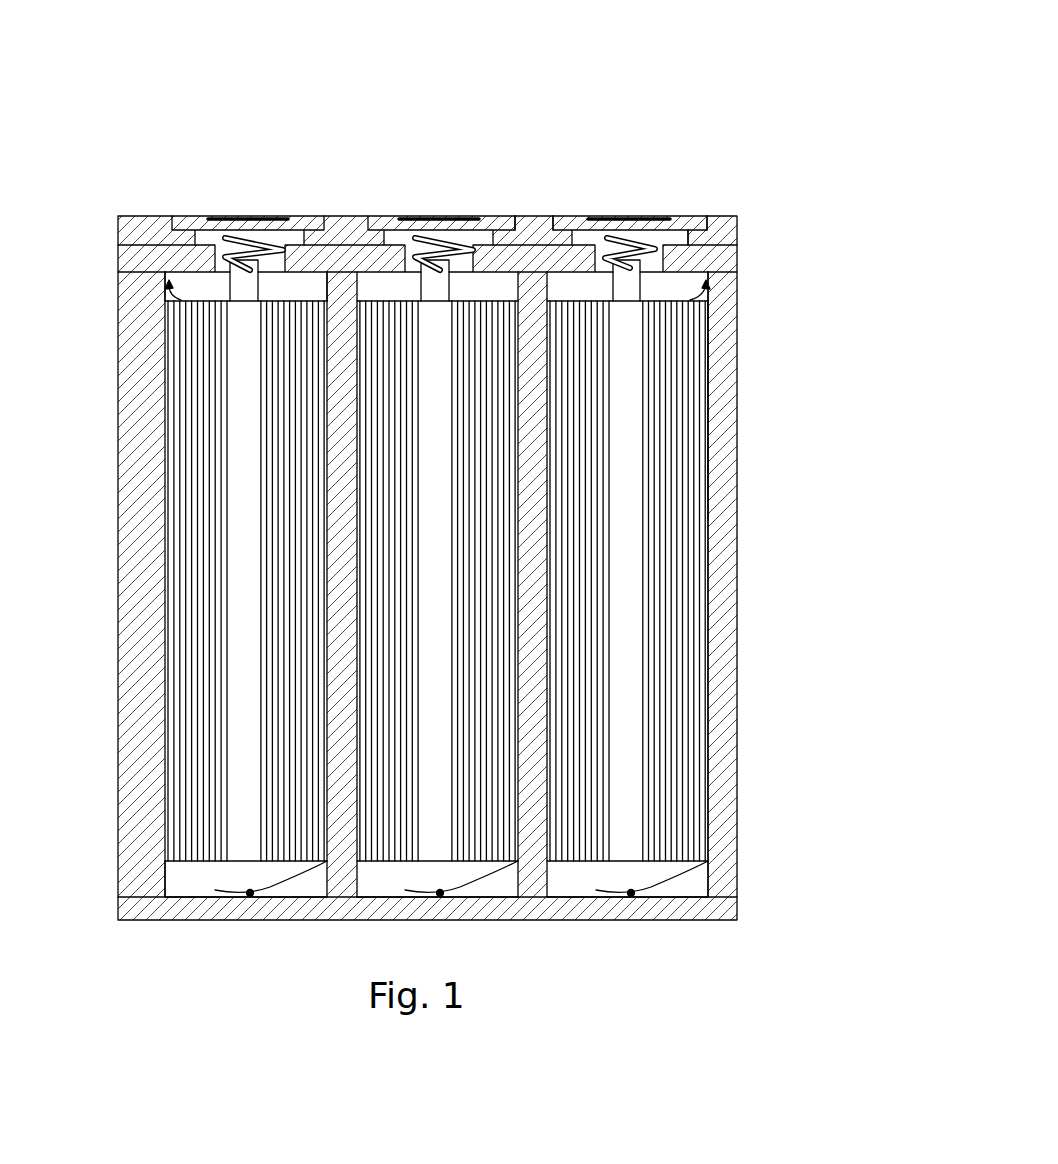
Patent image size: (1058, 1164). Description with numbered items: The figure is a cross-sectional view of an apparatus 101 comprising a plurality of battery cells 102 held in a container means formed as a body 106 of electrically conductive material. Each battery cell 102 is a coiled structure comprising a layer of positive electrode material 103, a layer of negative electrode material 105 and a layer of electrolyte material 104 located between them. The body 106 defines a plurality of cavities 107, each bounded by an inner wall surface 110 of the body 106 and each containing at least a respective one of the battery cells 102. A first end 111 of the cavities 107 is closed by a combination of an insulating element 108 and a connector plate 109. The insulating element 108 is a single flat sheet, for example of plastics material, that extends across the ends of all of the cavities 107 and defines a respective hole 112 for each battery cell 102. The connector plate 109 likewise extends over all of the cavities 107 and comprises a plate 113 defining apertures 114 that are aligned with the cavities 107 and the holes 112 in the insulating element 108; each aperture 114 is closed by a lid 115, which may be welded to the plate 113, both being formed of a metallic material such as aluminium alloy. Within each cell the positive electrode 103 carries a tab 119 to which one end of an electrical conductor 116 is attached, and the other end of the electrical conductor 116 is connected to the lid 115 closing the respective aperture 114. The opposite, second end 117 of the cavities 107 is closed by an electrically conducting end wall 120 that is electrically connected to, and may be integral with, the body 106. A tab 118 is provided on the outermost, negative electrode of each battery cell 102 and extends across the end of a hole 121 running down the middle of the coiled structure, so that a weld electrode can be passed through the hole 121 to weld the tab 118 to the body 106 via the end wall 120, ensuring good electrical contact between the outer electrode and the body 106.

The apparatus 101 is at (654, 70).
The battery cell 102 is at (680, 752).
The layer of positive electrode material 103 is at (706, 460).
The layer of electrolyte material 104 is at (727, 430).
The layer of negative electrode material 105 is at (712, 405).
The body 106 is at (540, 535).
The cavity 107 is at (375, 290).
The insulating element 108 is at (115, 250).
The connector plate 109 is at (113, 222).
The inner wall surface 110 is at (160, 298).
The first end 111 is at (185, 290).
The hole 112 is at (303, 290).
The plate 113 is at (528, 216).
The aperture 114 is at (670, 237).
The lid 115 is at (219, 219).
The electrical conductor 116 is at (238, 232).
The second end 117 is at (182, 882).
The tab 118 is at (487, 880).
The tab 119 is at (627, 285).
The electrically conducting end wall 120 is at (665, 905).
The hole 121 is at (620, 455).